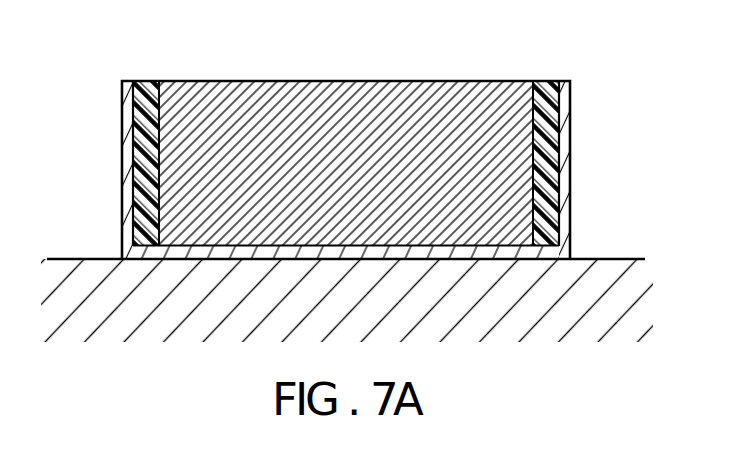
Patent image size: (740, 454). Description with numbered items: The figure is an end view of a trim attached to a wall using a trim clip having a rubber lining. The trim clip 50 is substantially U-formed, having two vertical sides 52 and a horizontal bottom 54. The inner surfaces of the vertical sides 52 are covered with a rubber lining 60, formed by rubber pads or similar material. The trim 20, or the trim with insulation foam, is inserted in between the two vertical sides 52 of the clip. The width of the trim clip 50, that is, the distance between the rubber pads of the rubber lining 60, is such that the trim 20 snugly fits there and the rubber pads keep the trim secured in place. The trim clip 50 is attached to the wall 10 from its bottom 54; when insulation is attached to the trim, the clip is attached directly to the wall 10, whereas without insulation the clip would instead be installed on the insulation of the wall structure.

The wall 10 is at (618, 257).
The trim 20 is at (488, 92).
The trim clip 50 is at (346, 160).
The vertical sides 52 is at (123, 134).
The bottom 54 is at (506, 252).
The rubber lining 60 is at (141, 180).